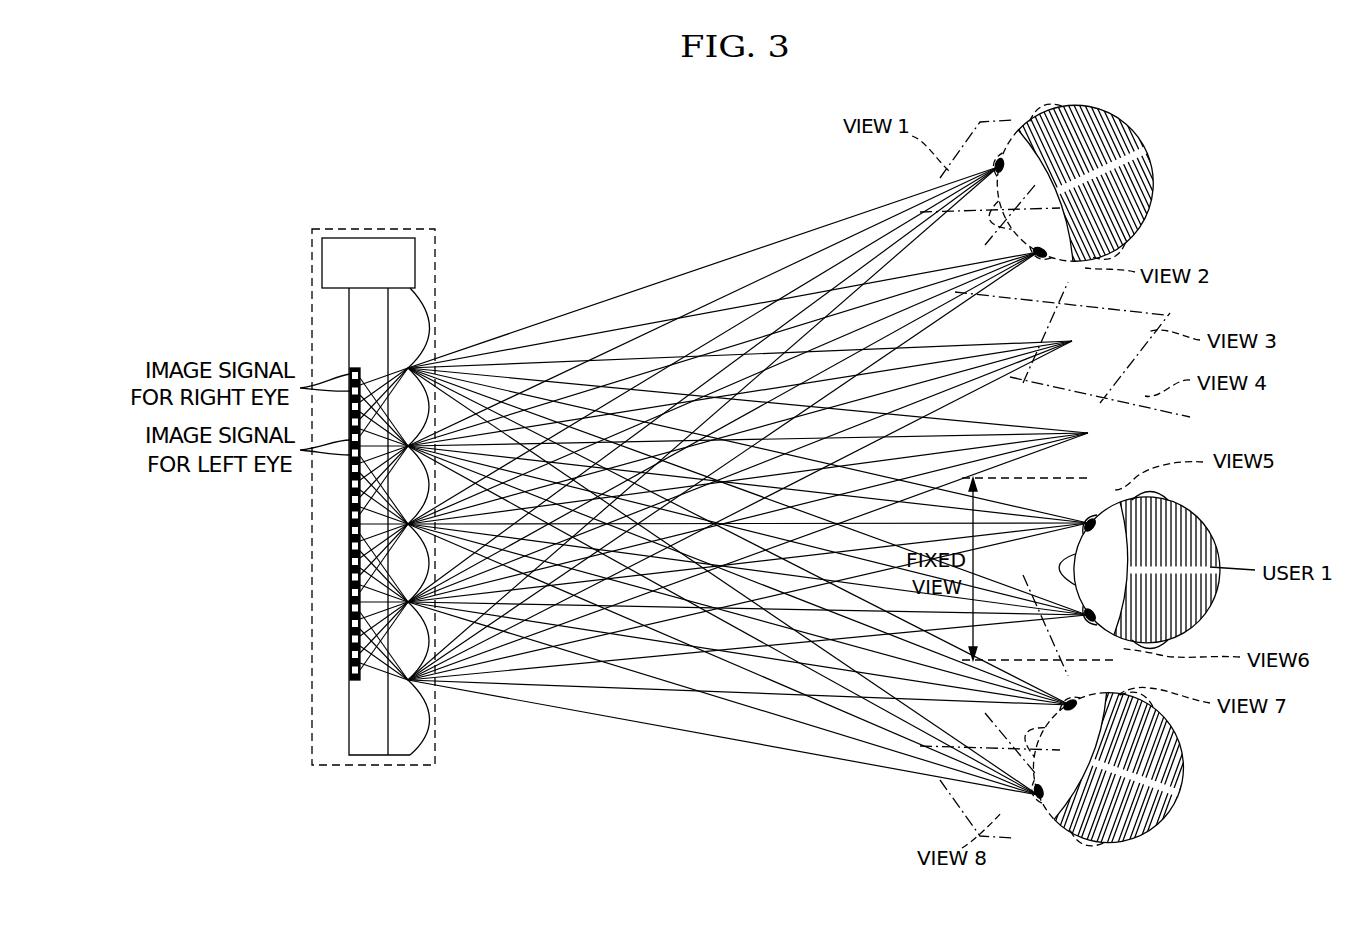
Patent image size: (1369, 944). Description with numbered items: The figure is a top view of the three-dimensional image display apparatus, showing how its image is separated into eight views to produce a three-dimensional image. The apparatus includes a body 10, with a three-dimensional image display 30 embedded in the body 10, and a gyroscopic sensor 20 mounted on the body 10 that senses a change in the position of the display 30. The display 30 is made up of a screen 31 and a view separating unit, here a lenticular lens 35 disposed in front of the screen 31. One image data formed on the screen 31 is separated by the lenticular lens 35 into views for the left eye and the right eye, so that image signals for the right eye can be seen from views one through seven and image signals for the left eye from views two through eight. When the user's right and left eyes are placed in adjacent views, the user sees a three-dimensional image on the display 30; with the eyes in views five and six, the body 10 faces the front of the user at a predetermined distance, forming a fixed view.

The body 10 is at (378, 229).
The gyroscopic sensor 20 is at (322, 260).
The 3D image display 30 is at (389, 576).
The screen 31 is at (356, 757).
The lenticular lens 35 is at (400, 756).